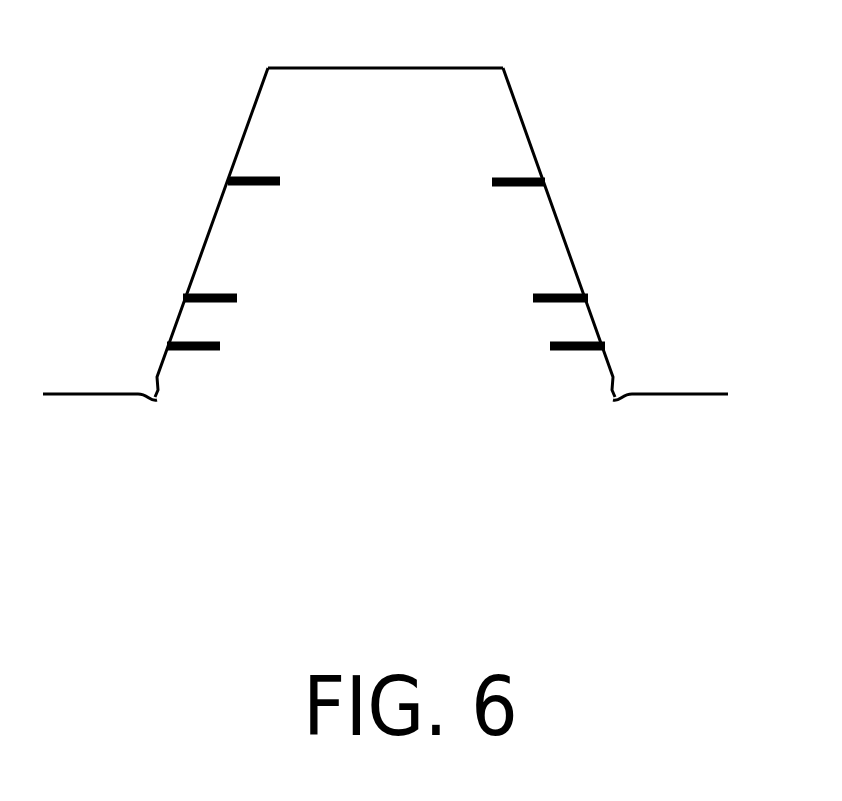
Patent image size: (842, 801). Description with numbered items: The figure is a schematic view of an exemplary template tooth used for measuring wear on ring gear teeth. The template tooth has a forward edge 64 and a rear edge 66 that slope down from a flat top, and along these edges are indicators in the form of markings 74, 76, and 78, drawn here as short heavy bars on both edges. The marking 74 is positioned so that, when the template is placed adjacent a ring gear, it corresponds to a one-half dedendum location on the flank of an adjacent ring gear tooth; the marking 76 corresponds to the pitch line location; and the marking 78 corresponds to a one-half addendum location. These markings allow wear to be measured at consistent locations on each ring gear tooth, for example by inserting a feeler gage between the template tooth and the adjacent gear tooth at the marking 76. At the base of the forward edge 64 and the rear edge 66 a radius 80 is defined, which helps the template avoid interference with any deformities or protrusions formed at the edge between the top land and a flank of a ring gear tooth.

The forward edge 64 is at (262, 80).
The rear edge 66 is at (510, 82).
The marking 74 is at (228, 177).
The marking 76 is at (183, 296).
The marking 78 is at (167, 344).
The radius 80 is at (157, 400).